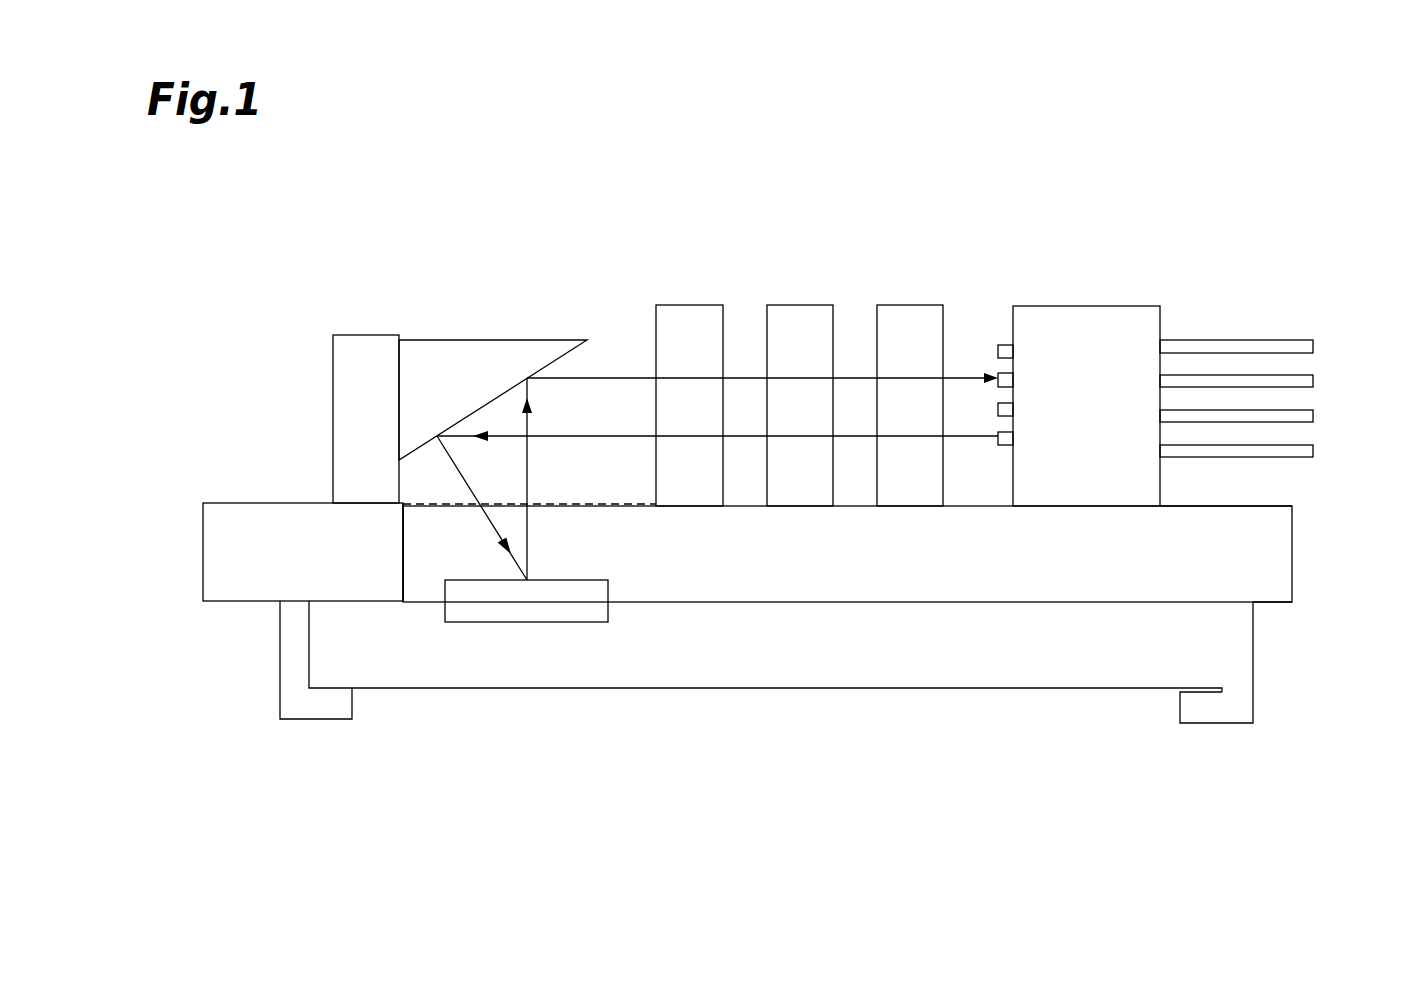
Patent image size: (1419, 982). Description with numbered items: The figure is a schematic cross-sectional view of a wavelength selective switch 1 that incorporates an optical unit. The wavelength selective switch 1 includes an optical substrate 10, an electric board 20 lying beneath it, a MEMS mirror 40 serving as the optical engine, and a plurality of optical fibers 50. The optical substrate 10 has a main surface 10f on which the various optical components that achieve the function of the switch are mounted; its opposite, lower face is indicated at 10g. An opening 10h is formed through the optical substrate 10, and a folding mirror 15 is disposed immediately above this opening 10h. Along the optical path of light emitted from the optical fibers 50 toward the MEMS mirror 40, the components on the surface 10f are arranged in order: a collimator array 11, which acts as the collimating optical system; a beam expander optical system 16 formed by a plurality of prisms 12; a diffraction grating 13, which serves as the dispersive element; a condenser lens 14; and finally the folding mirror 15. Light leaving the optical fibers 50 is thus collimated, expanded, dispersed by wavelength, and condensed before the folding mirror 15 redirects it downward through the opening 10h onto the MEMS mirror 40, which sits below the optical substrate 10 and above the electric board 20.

The wavelength selective switch 1 is at (1245, 210).
The optical substrate 10 is at (1270, 553).
The surface 10f is at (1265, 506).
The bottom surface of housing 10g is at (1265, 603).
The opening 10h is at (403, 553).
The collimator array 11 is at (1120, 305).
The prisms 12 is at (926, 370).
The beam expander optical system 16 is at (910, 304).
The diffraction grating 13 is at (800, 304).
The condenser lens 14 is at (690, 304).
The folding mirror 15 is at (473, 338).
The electric board 20 is at (775, 690).
The MEMS mirror 40 is at (527, 622).
The optical fibers 50 is at (1305, 452).